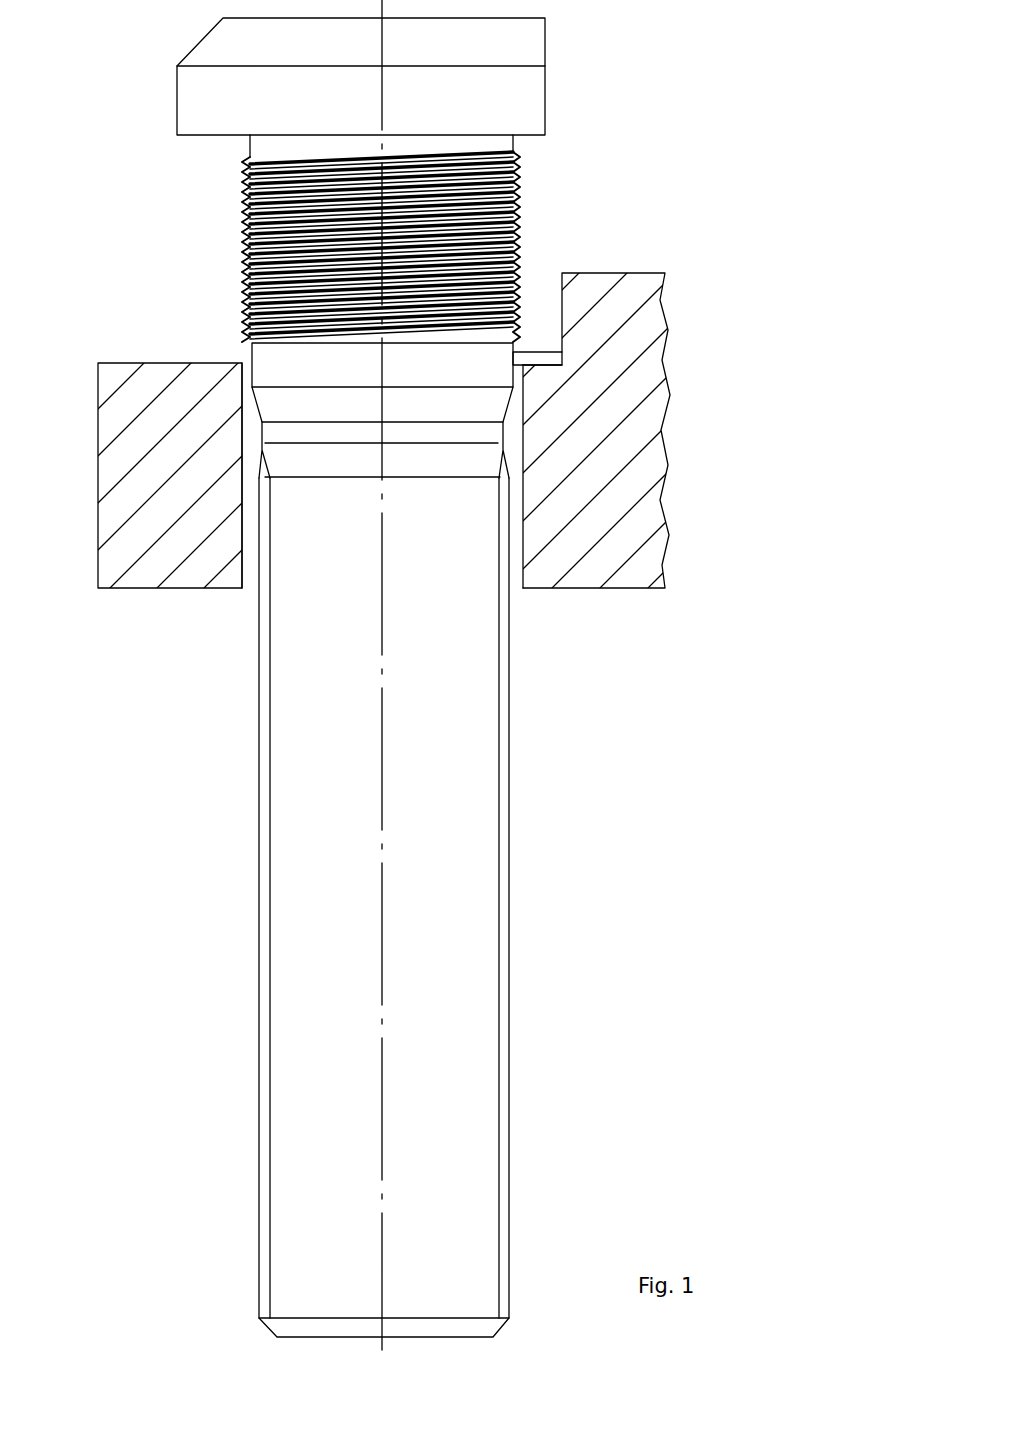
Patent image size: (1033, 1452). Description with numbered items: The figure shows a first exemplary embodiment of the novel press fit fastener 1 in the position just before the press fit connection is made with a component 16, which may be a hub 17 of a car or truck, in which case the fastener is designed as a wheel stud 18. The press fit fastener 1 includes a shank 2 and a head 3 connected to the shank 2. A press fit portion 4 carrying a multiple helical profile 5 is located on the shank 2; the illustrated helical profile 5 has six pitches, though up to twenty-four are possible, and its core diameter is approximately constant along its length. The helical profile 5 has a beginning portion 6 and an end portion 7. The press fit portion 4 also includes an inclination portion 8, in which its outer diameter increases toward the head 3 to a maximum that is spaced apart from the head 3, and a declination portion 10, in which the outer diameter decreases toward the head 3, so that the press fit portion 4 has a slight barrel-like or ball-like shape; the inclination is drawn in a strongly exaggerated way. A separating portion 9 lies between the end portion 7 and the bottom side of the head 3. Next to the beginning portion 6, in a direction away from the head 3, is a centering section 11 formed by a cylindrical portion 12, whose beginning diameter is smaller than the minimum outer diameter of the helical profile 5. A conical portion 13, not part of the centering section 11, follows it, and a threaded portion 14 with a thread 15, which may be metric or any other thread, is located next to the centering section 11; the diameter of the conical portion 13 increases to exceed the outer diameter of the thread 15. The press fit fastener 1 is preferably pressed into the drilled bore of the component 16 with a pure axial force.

The press fit fastener 1 is at (166, 101).
The shank 2 is at (512, 835).
The head 3 is at (545, 45).
The press fit portion 4 is at (518, 225).
The helical profile 5 is at (520, 250).
The beginning portion 6 is at (250, 340).
The end portion 7 is at (250, 160).
The inclination portion 8 is at (242, 250).
The separating portion 9 is at (513, 150).
The declination portion 10 is at (245, 180).
The centering section 11 is at (513, 372).
The cylindrical portion 12 is at (530, 352).
The conical portion 13 is at (523, 410).
The threaded portion 14 is at (509, 687).
The thread 15 is at (499, 740).
The component 16 is at (595, 465).
The hub 17 is at (428, 442).
The wheel stud 18 is at (548, 118).